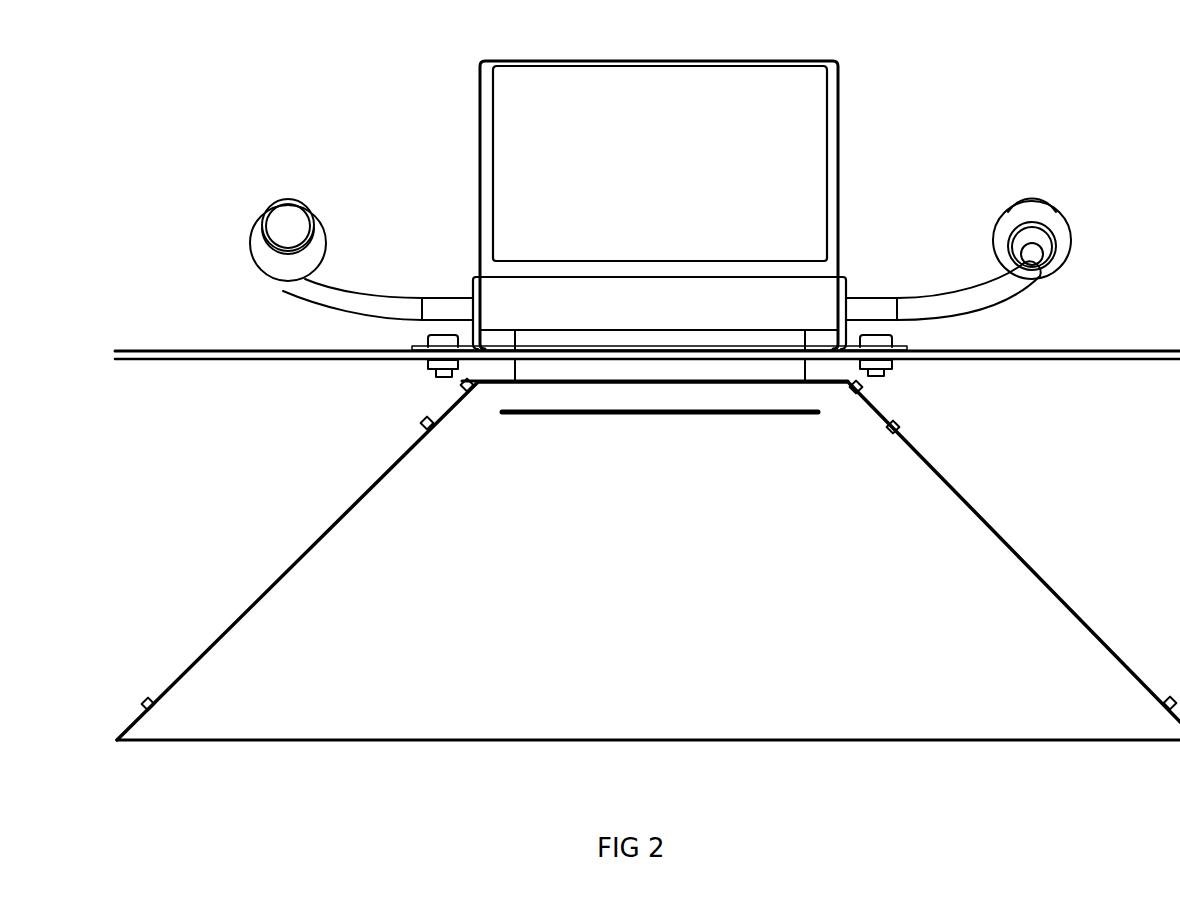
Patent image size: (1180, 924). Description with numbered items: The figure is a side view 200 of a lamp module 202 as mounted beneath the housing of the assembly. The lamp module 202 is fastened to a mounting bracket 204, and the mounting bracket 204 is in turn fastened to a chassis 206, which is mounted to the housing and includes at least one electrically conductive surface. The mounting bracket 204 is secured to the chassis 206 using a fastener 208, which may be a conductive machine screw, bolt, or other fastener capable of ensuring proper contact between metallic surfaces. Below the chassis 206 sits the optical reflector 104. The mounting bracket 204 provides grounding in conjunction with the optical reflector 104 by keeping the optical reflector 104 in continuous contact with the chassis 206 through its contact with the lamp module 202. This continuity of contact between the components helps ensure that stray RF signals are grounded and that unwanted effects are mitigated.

The side view 200 is at (647, 383).
The lamp module 202 is at (655, 223).
The mounting bracket 204 is at (478, 157).
The chassis 206 is at (1068, 350).
The fastener 208 is at (883, 373).
The optical reflector 104 is at (648, 559).